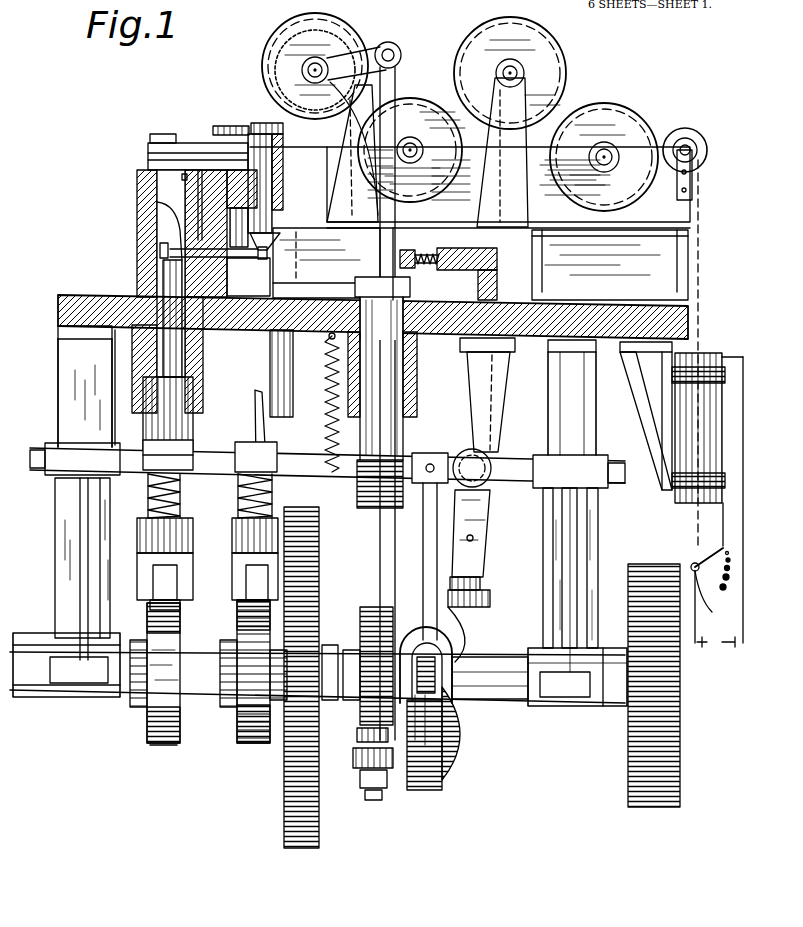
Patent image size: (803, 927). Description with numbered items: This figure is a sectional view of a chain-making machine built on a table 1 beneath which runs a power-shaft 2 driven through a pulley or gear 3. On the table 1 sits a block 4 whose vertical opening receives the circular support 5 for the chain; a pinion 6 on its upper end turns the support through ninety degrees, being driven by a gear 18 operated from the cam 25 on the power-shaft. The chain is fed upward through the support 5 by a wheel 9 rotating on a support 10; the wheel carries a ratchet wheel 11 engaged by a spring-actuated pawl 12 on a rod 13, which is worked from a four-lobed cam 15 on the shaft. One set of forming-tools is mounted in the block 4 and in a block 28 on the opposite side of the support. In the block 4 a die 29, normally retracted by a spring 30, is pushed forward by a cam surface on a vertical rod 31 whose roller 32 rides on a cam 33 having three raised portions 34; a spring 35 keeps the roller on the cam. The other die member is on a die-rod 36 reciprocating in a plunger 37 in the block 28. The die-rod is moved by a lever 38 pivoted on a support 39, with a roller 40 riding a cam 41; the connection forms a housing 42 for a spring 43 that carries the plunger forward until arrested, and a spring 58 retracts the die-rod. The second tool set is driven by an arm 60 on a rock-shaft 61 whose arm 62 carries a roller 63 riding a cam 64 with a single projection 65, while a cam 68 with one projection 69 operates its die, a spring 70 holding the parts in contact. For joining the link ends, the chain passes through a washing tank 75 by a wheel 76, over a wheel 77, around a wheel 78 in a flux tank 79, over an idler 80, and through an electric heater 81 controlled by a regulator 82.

The table 1 is at (112, 300).
The power-shaft 2 is at (510, 700).
The pulley or gear 3 is at (626, 778).
The block 4 is at (200, 190).
The support 5 is at (230, 128).
The pinion 6 is at (258, 126).
The wheel 9 is at (296, 28).
The support 10 is at (330, 148).
The ratchet wheel 11 is at (290, 57).
The spring-actuated pawl 12 is at (384, 44).
The rod 13 is at (396, 82).
The cam 15 is at (362, 617).
The gear 18 is at (256, 128).
The cam 25 is at (308, 780).
The block 28 is at (326, 263).
The die 29 is at (260, 262).
The spring 30 is at (176, 215).
The rod 31 is at (128, 246).
The roller 32 is at (184, 606).
The cam 33 is at (165, 695).
The raised portions 34 is at (178, 745).
The spring 35 is at (183, 496).
The die-rod 36 is at (433, 245).
The plunger 37 is at (407, 247).
The lever 38 is at (486, 514).
The support 39 is at (500, 372).
The roller 40 is at (492, 603).
The cam 41 is at (460, 748).
The housing 42 is at (470, 257).
The spring 43 is at (424, 272).
The spring 58 is at (478, 541).
The arm 60 is at (262, 412).
The rock-shaft 61 is at (210, 460).
The arm 62 is at (424, 551).
The roller 63 is at (440, 672).
The cam 64 is at (455, 781).
The projection 65 is at (425, 793).
The cam 68 is at (252, 747).
The projection 69 is at (238, 600).
The spring 70 is at (236, 512).
The tank 75 is at (426, 192).
The wheel 76 is at (432, 116).
The wheel 77 is at (486, 30).
The wheel 78 is at (607, 108).
The tank 79 is at (568, 188).
The idler 80 is at (699, 134).
The heater 81 is at (672, 495).
The regulator 82 is at (713, 595).